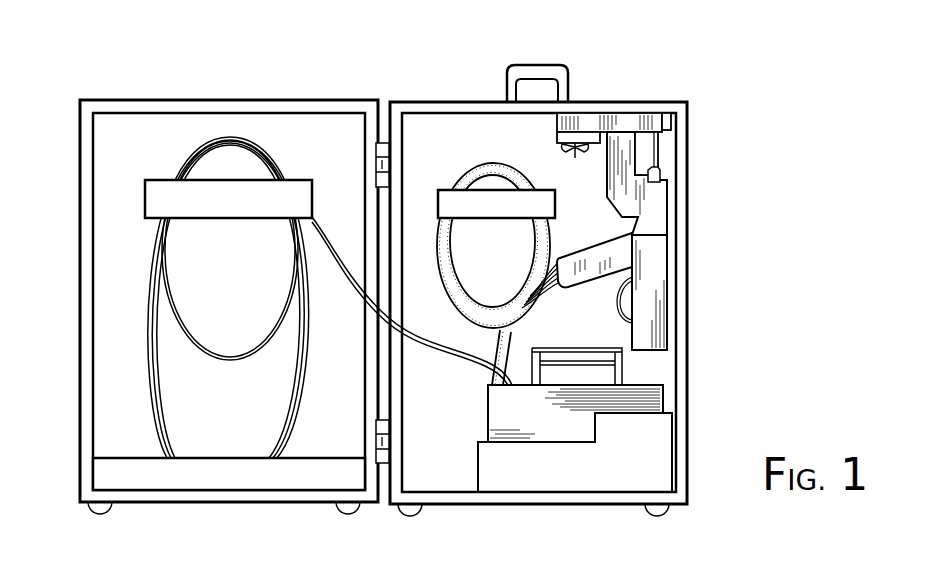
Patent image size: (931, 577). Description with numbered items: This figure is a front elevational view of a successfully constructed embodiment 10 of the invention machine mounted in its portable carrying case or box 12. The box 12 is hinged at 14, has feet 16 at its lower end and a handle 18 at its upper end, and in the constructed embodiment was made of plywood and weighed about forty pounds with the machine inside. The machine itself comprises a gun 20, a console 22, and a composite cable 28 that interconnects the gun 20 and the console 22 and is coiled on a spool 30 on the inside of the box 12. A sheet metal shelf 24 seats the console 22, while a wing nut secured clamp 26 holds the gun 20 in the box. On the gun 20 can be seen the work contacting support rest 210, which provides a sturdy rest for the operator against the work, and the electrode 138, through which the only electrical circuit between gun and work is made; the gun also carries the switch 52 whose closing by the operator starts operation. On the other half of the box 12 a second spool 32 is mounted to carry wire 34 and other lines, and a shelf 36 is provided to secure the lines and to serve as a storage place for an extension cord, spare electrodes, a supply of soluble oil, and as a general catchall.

The embodiment of the invention machine 10 is at (102, 72).
The portable carrying case or box 12 is at (167, 99).
The hinge 14 is at (376, 150).
The feet 16 is at (112, 510).
The handle 18 is at (507, 73).
The gun 20 is at (670, 250).
The console 22 is at (488, 405).
The sheet metal shelf 24 is at (478, 455).
The wing nut secured clamp 26 is at (557, 128).
The composite cable 28 is at (462, 175).
The spool 30 is at (546, 186).
The spool 32 is at (262, 220).
The wire 34 is at (171, 172).
The shelf 36 is at (112, 458).
The switch 52 is at (613, 230).
The electrode 138 is at (662, 153).
The work contacting support rest 210 is at (672, 124).